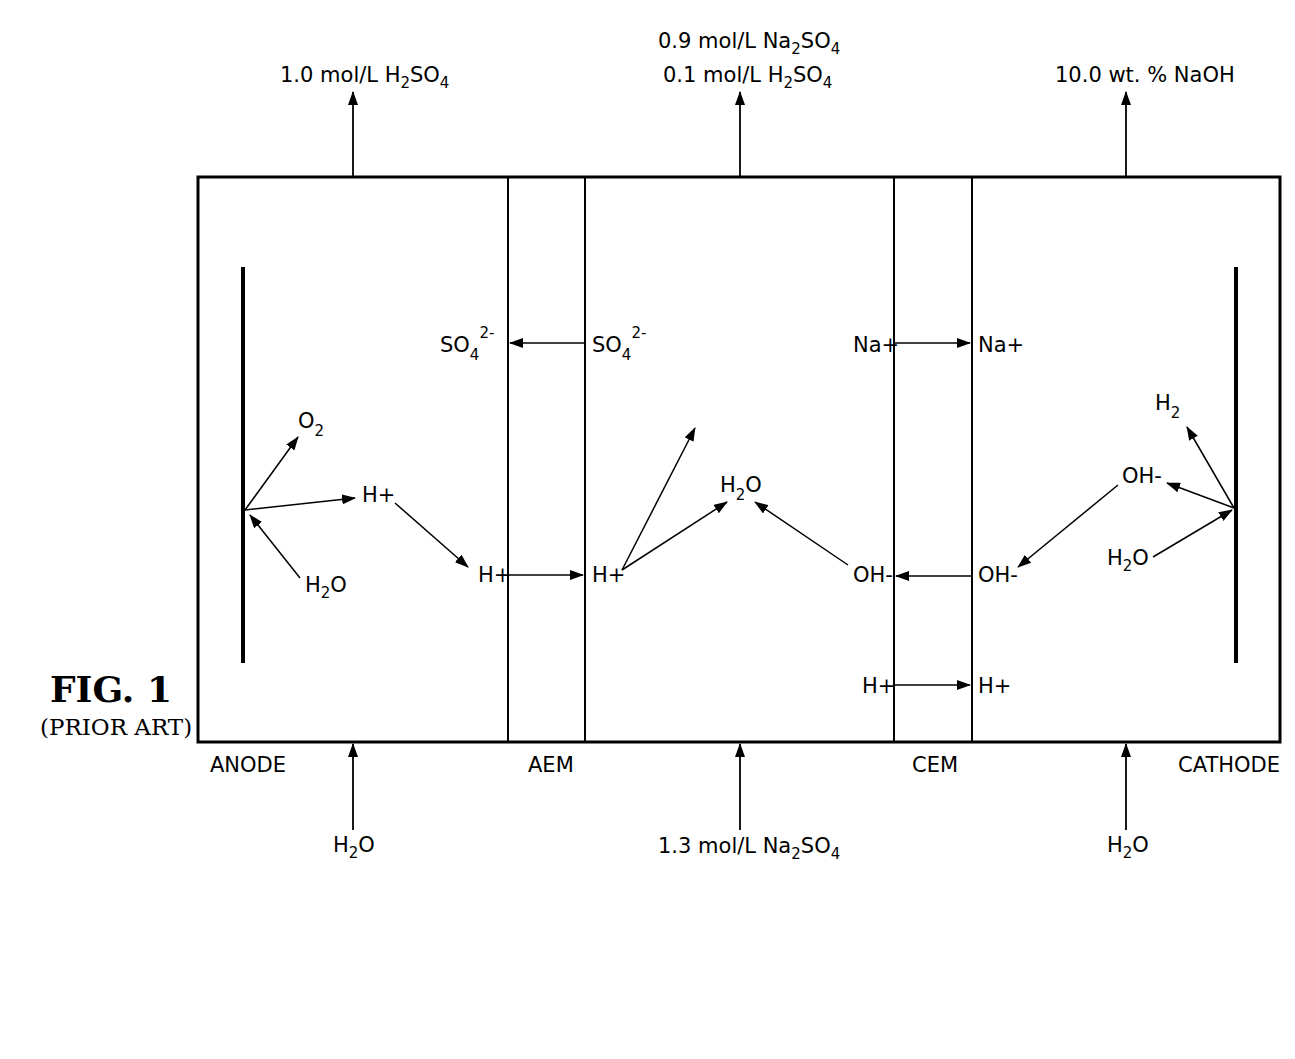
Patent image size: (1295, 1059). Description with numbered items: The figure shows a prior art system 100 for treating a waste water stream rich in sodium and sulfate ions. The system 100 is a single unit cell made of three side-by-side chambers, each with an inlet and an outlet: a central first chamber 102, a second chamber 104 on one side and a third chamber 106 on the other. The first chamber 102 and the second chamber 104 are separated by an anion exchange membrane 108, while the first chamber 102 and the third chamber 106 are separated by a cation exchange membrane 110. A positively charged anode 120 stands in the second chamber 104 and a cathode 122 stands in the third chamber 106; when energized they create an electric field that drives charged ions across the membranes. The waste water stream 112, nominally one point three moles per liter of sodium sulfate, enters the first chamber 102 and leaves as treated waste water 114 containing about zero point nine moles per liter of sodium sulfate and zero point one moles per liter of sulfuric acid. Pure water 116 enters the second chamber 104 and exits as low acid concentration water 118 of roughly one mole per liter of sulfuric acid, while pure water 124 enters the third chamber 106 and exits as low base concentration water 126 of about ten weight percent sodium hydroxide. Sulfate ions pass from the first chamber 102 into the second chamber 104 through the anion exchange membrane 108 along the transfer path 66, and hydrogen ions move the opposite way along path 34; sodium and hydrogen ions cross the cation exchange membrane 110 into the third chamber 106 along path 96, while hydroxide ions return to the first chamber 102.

The system 100 is at (128, 292).
The first chamber 102 is at (720, 238).
The second chamber 104 is at (333, 238).
The third chamber 106 is at (1106, 238).
The anion exchange membrane (AEM) 108 is at (508, 270).
The cation exchange membrane (CEM) 110 is at (894, 270).
The waste water stream 112 is at (740, 790).
The treated waste water 114 is at (740, 138).
The pure water 116 is at (353, 790).
The low acid concentration water 118 is at (353, 138).
The anode 120 is at (245, 620).
The cathode 122 is at (1234, 620).
The pure water 124 is at (1126, 790).
The low base concentration water 126 is at (1126, 138).
The proton transfer through AEM 34 is at (545, 561).
The sulfate transfer through AEM 66 is at (547, 329).
The sodium ion transfer through CEM 96 is at (932, 329).